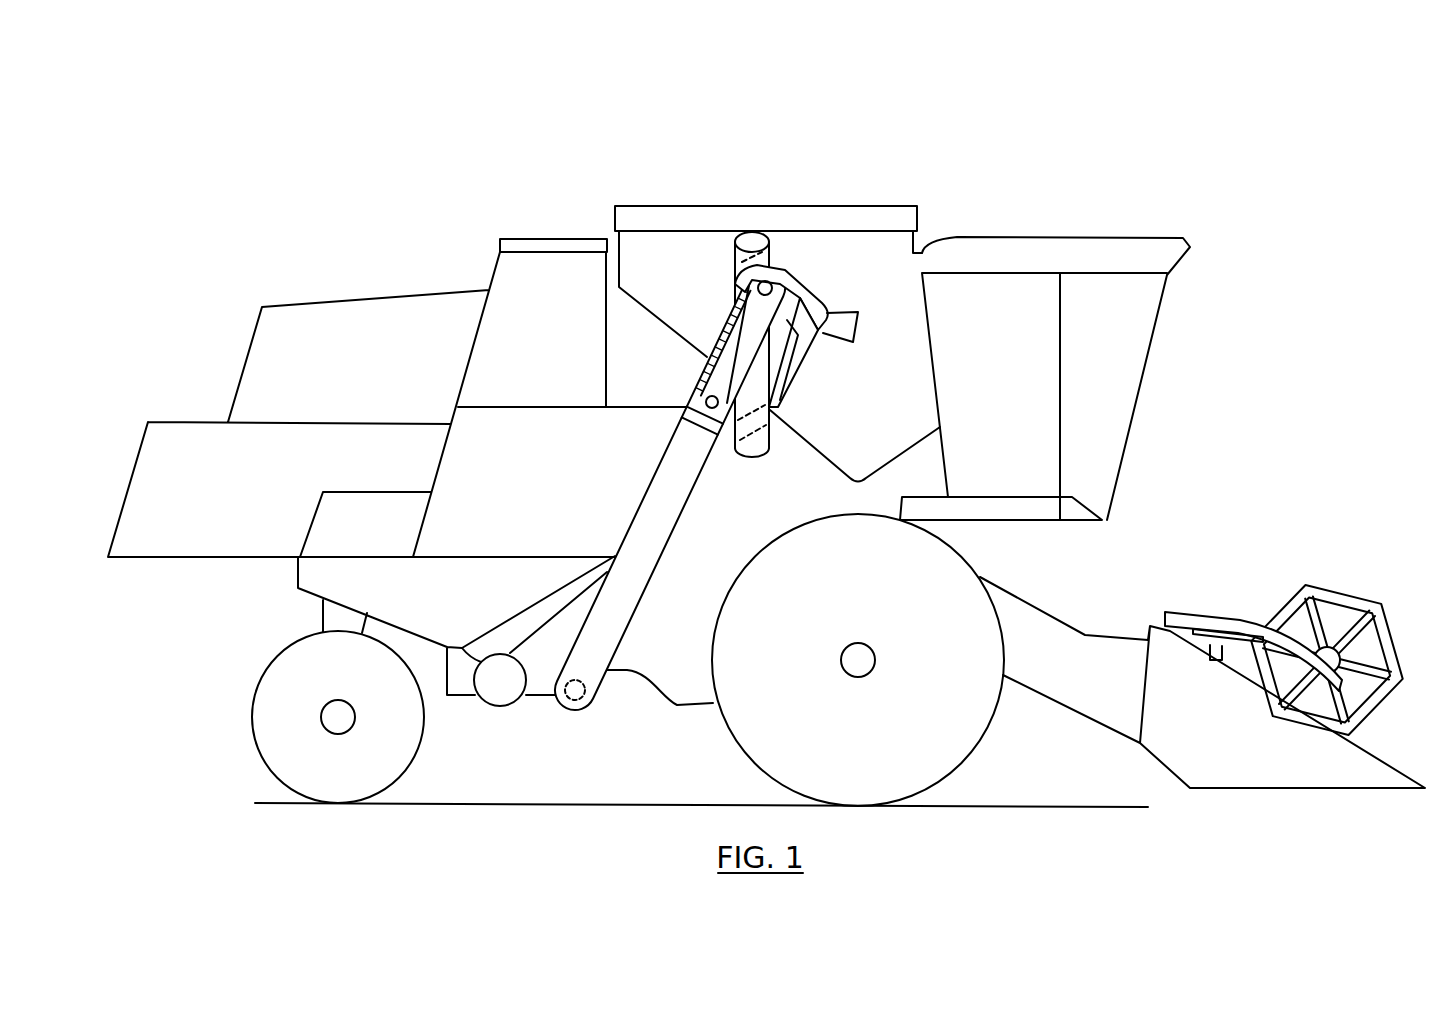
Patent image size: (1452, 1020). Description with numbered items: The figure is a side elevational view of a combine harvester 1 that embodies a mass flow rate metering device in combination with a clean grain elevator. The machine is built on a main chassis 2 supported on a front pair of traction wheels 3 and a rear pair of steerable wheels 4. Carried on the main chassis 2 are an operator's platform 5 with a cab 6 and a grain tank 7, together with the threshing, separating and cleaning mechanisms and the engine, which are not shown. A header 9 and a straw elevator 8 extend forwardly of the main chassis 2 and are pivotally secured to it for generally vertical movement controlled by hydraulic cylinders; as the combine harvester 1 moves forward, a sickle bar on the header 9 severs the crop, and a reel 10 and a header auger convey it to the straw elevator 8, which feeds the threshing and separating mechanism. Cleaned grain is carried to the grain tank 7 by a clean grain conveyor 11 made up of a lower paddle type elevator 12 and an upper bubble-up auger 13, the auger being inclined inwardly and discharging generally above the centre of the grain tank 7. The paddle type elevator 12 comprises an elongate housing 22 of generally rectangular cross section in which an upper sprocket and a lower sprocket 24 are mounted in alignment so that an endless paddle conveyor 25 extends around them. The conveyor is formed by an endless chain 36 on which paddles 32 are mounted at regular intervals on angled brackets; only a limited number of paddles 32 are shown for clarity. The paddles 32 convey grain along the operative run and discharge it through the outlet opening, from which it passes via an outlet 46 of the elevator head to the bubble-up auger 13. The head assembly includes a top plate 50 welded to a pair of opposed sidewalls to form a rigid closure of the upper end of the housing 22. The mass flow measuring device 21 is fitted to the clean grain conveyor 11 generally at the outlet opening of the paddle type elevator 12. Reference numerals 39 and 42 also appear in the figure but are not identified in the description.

The combine harvester 1 is at (1100, 189).
The main chassis 2 is at (307, 578).
The traction wheels 3 is at (967, 738).
The steerable wheels 4 is at (410, 745).
The operator's platform 5 is at (1007, 512).
The cab 6 is at (1168, 260).
The grain tank 7 is at (620, 230).
The straw elevator 8 is at (1053, 693).
The header 9 is at (1242, 600).
The reel 10 is at (1343, 600).
The clean grain conveyor 11 is at (628, 495).
The paddle type elevator 12 is at (697, 480).
The bubble-up auger 13 is at (765, 211).
The mass flow measuring device 21 is at (853, 293).
The elongate housing 22 is at (710, 372).
The lower sprocket 24 is at (582, 702).
The endless paddle conveyor 25 is at (757, 289).
The paddles 32 is at (740, 265).
The endless chain 36 is at (697, 385).
The toothed rack 39 is at (745, 310).
The cylinder mount 42 is at (745, 270).
The outlet 46 is at (782, 367).
The top plate 50 is at (802, 278).